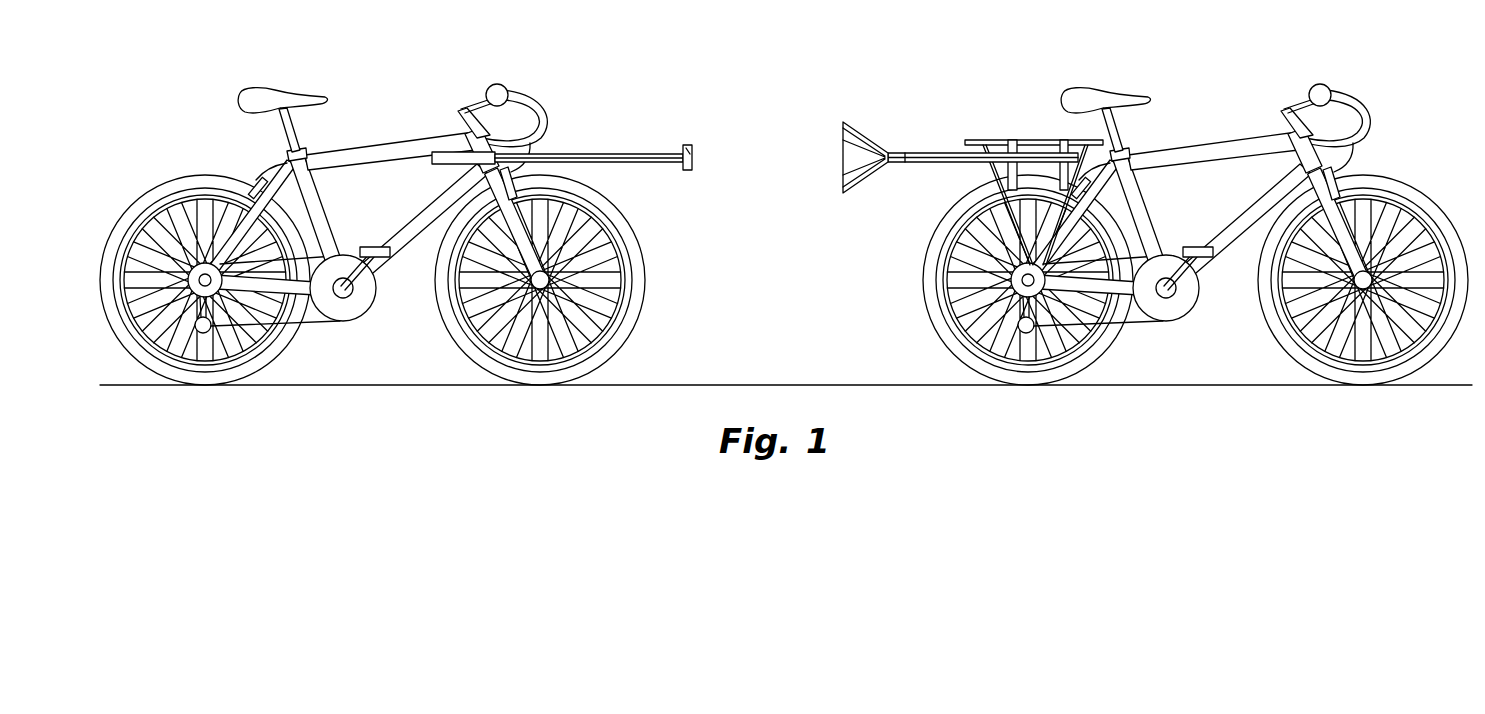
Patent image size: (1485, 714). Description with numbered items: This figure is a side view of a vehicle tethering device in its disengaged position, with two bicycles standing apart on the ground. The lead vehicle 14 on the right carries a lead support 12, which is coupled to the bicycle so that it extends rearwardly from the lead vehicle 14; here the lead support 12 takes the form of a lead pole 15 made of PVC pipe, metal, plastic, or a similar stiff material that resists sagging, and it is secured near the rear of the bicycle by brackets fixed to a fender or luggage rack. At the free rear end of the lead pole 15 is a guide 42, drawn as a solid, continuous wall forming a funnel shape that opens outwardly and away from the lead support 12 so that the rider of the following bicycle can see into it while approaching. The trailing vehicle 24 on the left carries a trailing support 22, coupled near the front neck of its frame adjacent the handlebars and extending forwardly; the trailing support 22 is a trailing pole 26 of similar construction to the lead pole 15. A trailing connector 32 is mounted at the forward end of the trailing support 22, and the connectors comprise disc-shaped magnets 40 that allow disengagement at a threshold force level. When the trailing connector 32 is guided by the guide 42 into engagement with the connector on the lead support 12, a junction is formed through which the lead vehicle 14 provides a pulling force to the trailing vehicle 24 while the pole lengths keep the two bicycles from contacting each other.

The lead support 12 is at (913, 145).
The lead vehicle 14 is at (1222, 153).
The lead pole 15 is at (930, 163).
The trailing support 22 is at (597, 103).
The trailing vehicle 24 is at (400, 153).
The trailing pole 26 is at (657, 156).
The trailing connector 32 is at (690, 150).
The magnets 40 is at (692, 140).
The guide 42 is at (858, 133).